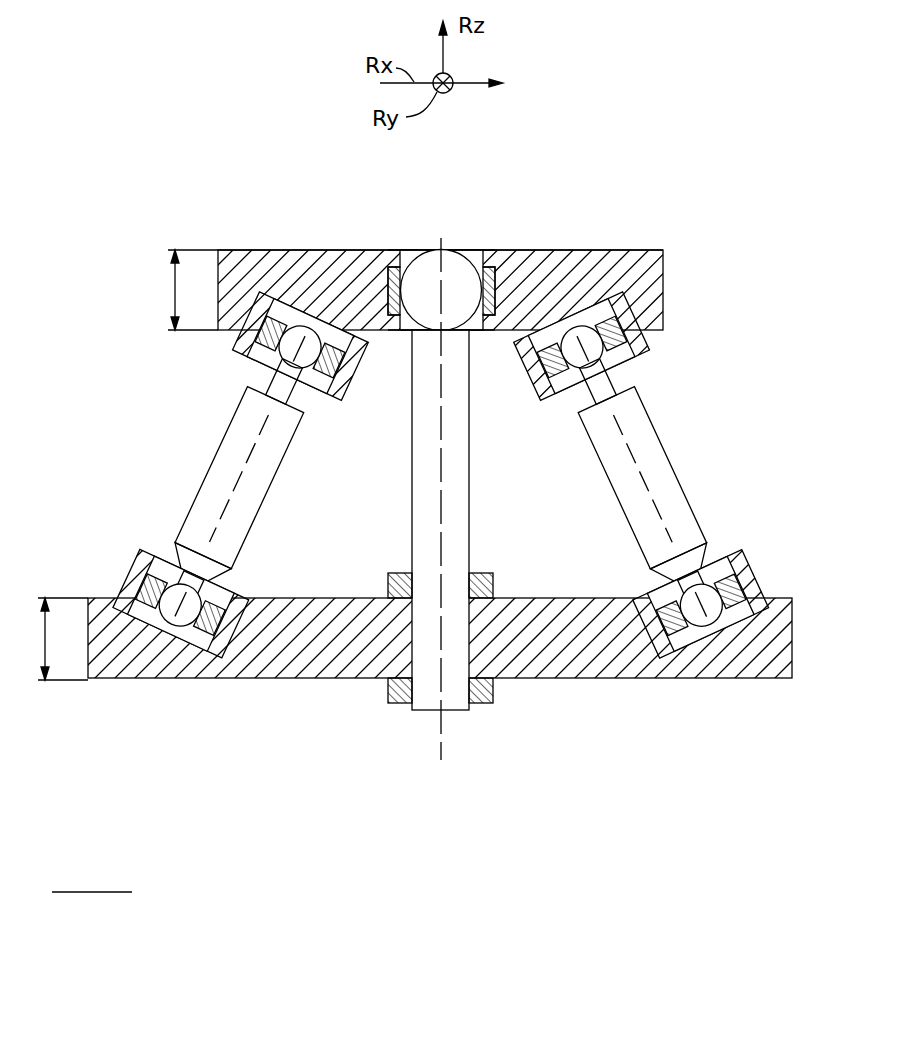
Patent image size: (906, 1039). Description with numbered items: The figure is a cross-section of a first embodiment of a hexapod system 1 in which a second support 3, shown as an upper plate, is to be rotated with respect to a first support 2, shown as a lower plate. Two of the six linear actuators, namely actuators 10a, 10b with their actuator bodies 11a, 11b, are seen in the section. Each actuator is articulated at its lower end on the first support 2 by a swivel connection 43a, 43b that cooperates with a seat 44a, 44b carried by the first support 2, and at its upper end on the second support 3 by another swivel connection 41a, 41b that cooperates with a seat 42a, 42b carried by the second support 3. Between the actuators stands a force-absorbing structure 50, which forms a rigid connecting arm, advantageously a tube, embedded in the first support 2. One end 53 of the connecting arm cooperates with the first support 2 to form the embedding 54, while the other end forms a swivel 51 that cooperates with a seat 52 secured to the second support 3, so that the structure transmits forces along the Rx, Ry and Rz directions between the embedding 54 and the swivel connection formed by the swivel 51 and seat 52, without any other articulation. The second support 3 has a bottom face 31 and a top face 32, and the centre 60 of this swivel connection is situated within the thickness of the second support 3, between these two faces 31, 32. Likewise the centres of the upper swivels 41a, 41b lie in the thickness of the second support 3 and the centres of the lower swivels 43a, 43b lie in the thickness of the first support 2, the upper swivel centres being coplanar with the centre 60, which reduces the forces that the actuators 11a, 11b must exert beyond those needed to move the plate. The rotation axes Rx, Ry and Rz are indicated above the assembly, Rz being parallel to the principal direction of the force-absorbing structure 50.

The parallel kinematic positioning device 1 is at (657, 135).
The first support 2 is at (552, 655).
The second support 3 is at (620, 250).
The linear actuator 10a is at (710, 428).
The linear actuator 10b is at (184, 472).
The actuator 11a is at (672, 523).
The actuator 11b is at (210, 513).
The bottom face 31 is at (472, 335).
The top face 32 is at (565, 250).
The swivel connection 41a is at (622, 372).
The swivel connection 41b is at (262, 377).
The seat 42a is at (615, 288).
The seat 42b is at (262, 408).
The swivel connection 43a is at (712, 572).
The swivel connection 43b is at (227, 594).
The seat 44a is at (663, 633).
The seat 44b is at (140, 592).
The force-absorbing structure 50 is at (460, 452).
The swivel 51 is at (448, 272).
The seat 52 is at (388, 274).
The end of the connecting arm 53 is at (450, 642).
The embedding 54 is at (368, 642).
The centre of the swivel connection 60 is at (442, 295).